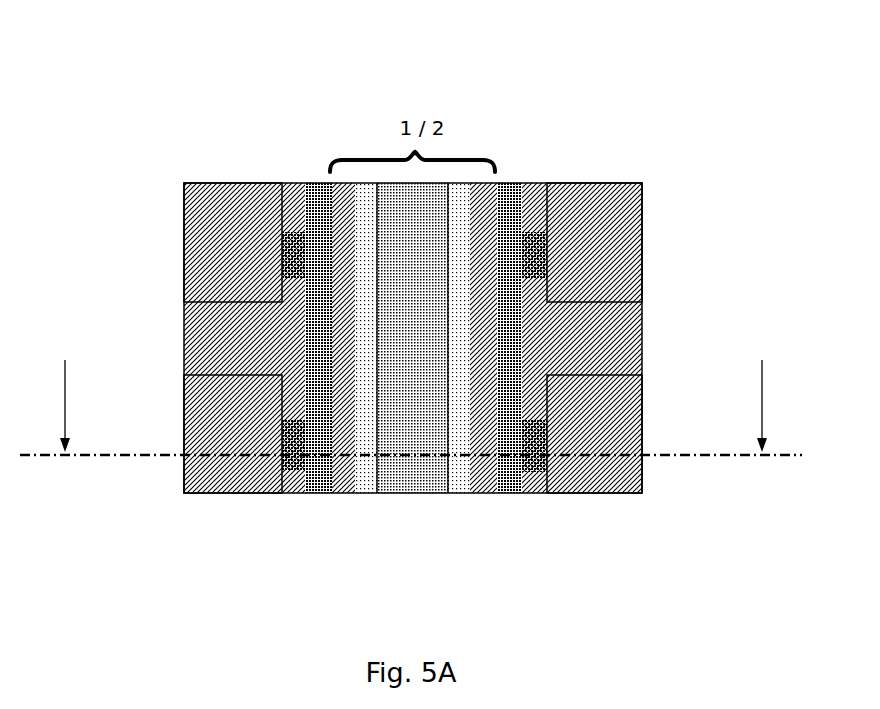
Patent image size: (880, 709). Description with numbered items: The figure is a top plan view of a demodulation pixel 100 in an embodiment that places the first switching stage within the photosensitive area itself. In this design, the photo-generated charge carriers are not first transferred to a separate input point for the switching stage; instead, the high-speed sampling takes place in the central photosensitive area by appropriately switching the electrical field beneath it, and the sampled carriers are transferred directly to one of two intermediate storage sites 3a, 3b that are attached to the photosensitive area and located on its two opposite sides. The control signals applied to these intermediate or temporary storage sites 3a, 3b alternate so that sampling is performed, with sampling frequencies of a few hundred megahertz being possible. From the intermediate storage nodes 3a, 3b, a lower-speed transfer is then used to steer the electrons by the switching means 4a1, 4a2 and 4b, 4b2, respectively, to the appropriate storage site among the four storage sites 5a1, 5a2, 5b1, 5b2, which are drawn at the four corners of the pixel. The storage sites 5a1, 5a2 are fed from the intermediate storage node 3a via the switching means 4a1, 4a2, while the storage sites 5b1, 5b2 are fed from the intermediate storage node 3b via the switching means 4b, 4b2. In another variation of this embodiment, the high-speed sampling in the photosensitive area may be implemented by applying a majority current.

The demodulation pixel 100 is at (641, 71).
The intermediate storage site 3a is at (316, 171).
The intermediate storage site 3b is at (509, 171).
The switching means 4a1 is at (293, 219).
The switching means 4a2 is at (292, 483).
The switching means 4b is at (532, 219).
The switching means 4b2 is at (531, 485).
The storage site 5a1 is at (232, 170).
The storage site 5a2 is at (233, 506).
The storage site 5b1 is at (600, 172).
The storage site 5b2 is at (593, 507).